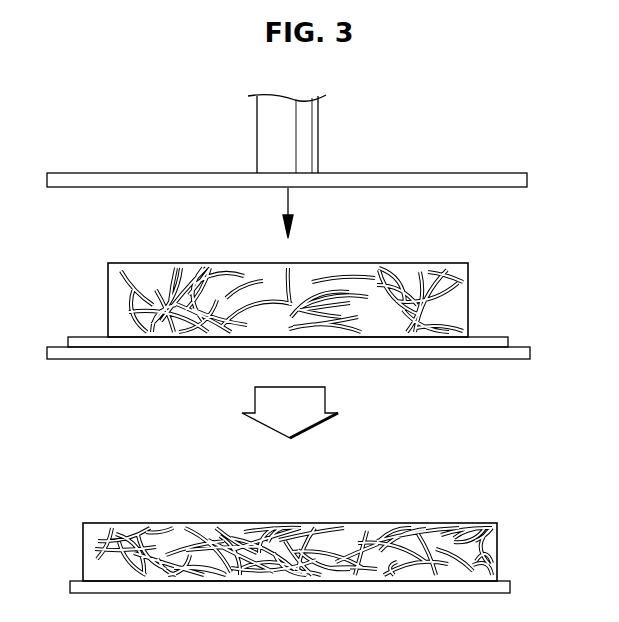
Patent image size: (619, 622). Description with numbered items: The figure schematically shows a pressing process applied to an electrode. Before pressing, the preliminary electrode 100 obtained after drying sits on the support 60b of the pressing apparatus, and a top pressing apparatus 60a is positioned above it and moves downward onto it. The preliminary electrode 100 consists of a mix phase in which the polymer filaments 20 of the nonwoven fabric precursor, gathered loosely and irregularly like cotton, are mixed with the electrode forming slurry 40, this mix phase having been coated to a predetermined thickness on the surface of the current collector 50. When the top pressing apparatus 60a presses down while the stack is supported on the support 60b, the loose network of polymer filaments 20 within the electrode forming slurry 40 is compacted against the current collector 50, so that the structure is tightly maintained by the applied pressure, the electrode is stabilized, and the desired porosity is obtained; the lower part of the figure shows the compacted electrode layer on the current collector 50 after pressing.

The polymer filaments 20 is at (255, 265).
The electrode forming slurry 40 is at (365, 268).
The current collector 50 is at (508, 341).
The top pressing apparatus 60a is at (527, 179).
The support 60b is at (530, 353).
The preliminary electrode 100 is at (247, 282).